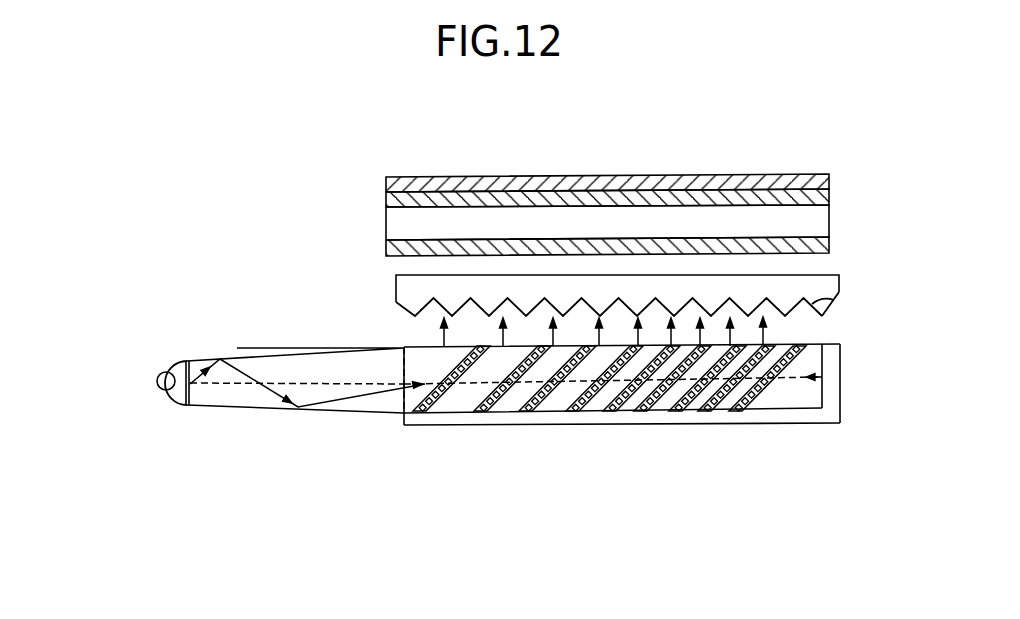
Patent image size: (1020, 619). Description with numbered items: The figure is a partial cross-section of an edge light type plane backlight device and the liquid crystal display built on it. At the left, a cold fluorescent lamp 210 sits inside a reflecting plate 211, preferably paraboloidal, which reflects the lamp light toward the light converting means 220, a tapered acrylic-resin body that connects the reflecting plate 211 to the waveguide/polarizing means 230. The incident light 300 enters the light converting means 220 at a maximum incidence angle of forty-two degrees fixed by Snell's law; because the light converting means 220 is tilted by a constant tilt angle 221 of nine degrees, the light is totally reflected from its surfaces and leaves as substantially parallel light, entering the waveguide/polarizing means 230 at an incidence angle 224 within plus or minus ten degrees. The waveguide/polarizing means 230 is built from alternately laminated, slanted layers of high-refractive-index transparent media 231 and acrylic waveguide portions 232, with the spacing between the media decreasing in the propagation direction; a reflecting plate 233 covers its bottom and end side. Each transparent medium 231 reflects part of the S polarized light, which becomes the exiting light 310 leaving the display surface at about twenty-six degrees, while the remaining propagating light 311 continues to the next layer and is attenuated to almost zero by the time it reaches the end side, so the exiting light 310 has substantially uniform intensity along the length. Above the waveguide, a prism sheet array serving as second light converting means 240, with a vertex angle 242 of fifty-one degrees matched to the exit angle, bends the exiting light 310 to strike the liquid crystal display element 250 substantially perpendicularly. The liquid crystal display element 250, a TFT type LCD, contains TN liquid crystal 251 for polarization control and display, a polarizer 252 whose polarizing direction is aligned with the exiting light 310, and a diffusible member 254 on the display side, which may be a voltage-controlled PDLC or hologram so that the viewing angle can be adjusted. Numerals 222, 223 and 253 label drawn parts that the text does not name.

The cold fluorescent lamp 210 is at (162, 366).
The reflecting plate 211 is at (154, 383).
The light converting means 220 is at (415, 466).
The tilt angle 221 is at (259, 352).
The light incident surface 222 is at (196, 404).
The reflecting surface 223 is at (244, 394).
The incidence angle 224 is at (344, 386).
The waveguide/polarizing means 230 is at (830, 466).
The transparent media 231 is at (446, 396).
The waveguide portions 232 is at (504, 396).
The reflecting plate 233 is at (564, 396).
The second light converting means 240 is at (840, 274).
The vertex angle 242 is at (840, 292).
The liquid crystal display element 250 is at (275, 131).
The TN liquid crystal 251 is at (386, 222).
The polarizer 252 is at (386, 250).
The upper substrate 253 is at (386, 199).
The diffusible member 254 is at (386, 182).
The incident light 300 is at (197, 362).
The exiting light 310 is at (503, 324).
The propagating light 311 is at (822, 377).